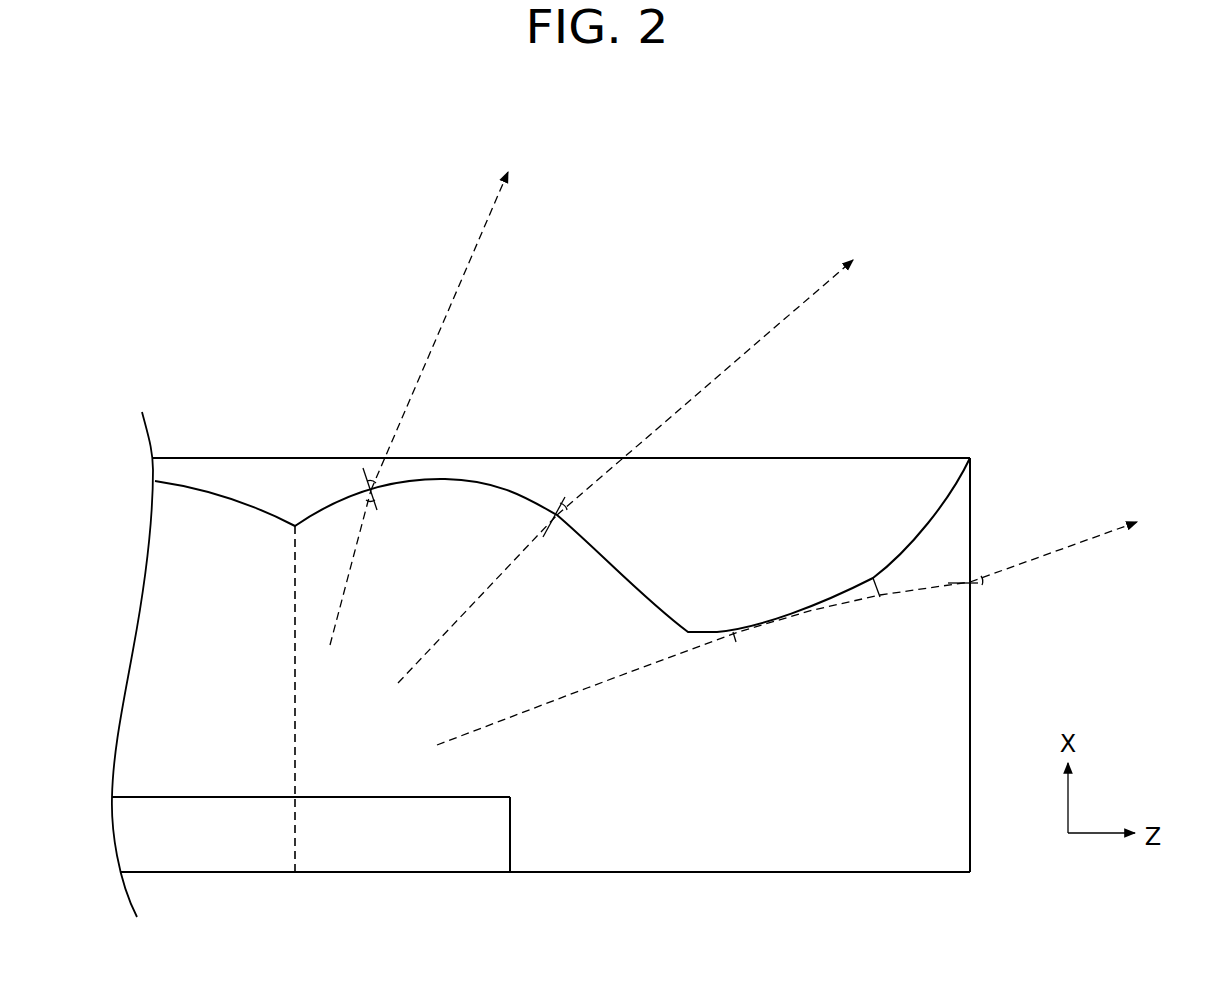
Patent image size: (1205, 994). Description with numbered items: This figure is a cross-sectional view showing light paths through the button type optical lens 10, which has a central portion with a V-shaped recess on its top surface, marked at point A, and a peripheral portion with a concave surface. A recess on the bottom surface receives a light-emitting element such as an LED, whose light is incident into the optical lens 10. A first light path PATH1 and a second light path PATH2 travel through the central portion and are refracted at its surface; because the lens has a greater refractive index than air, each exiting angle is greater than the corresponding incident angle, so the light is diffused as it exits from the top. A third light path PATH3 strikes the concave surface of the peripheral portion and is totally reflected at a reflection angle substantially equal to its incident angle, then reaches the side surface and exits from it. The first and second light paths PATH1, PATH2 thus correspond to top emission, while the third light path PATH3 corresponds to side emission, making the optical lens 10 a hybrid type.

The optical lens 10 is at (671, 96).
The vertex of pattern A is at (294, 511).
The light emitting diode LED is at (330, 855).
The first light path PATH1 is at (419, 408).
The second light path PATH2 is at (625, 471).
The third light path PATH3 is at (787, 624).